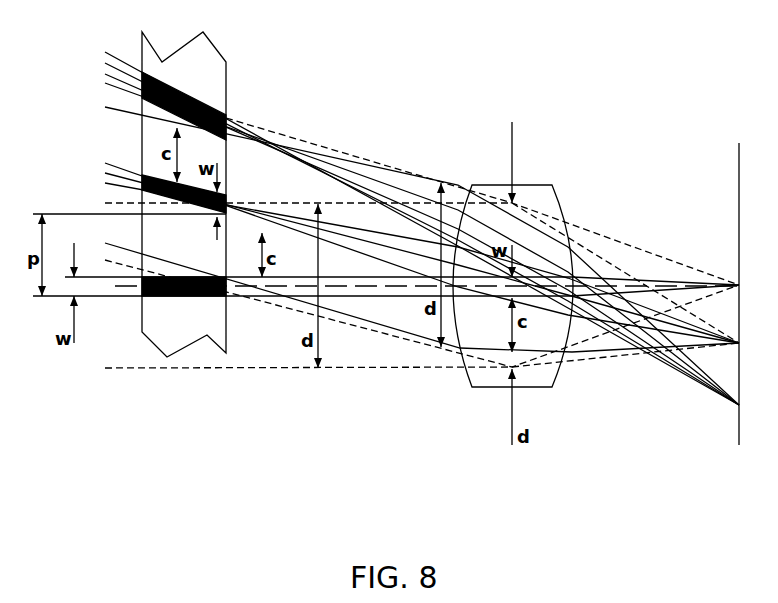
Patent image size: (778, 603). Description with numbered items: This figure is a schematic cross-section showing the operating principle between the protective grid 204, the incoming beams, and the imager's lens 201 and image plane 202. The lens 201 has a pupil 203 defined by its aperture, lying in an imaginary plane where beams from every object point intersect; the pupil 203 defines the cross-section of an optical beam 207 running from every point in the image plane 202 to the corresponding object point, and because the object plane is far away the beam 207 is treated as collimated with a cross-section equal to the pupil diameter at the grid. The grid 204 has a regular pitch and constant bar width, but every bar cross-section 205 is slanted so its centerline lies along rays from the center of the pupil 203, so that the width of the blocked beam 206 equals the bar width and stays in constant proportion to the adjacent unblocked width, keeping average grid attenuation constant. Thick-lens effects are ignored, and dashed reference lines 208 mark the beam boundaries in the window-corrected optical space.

The imager's lens 201 is at (533, 185).
The image plane 202 is at (738, 425).
The pupil 203 is at (510, 370).
The protective grid 204 is at (142, 330).
The bar cross-sections 205 is at (167, 180).
The blocked beam 206 is at (289, 213).
The optical beam 207 is at (340, 153).
The dashed reference ray 208 is at (400, 203).